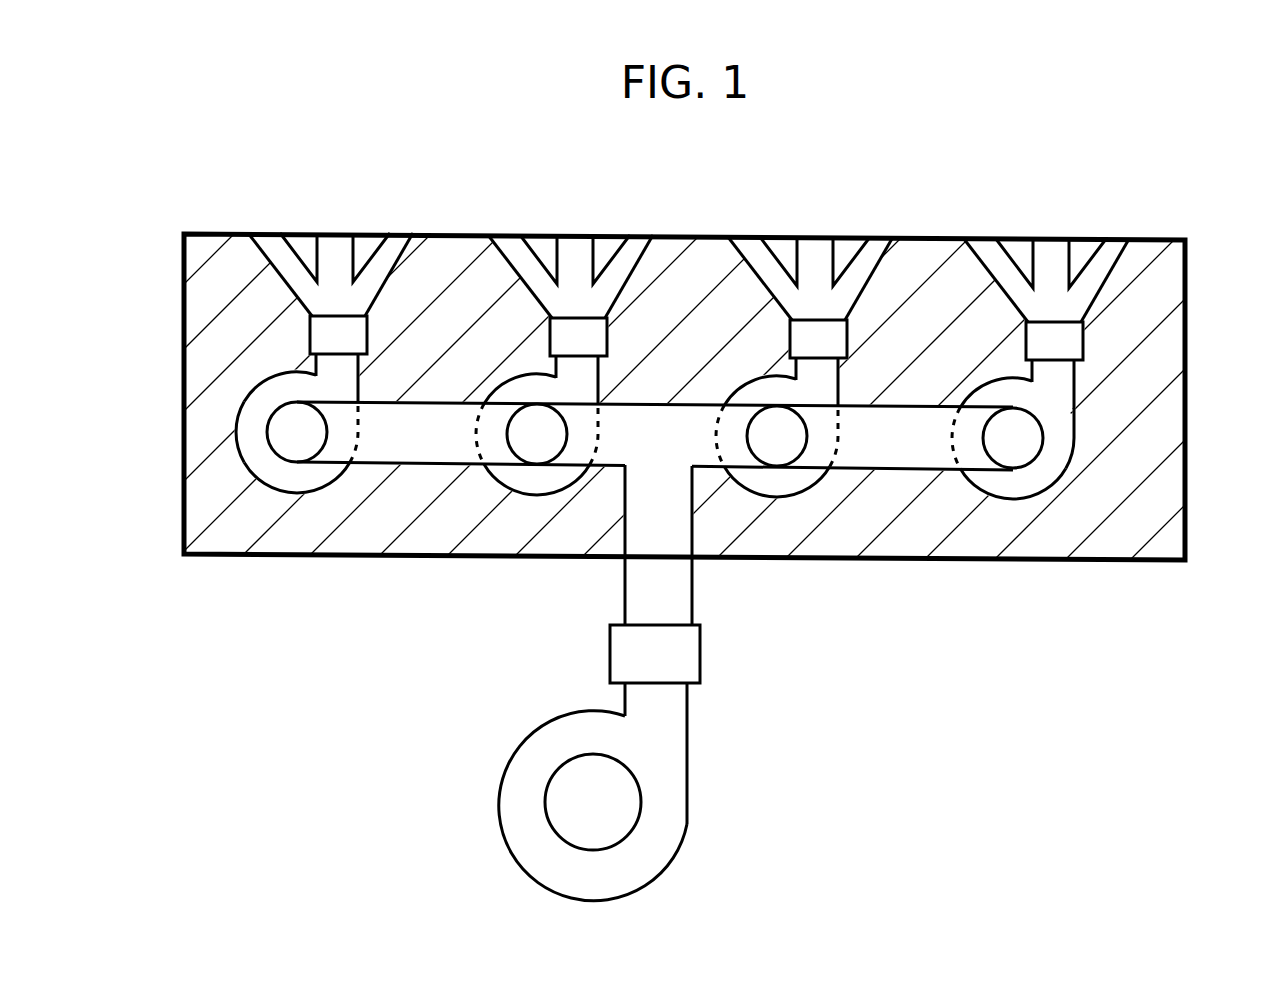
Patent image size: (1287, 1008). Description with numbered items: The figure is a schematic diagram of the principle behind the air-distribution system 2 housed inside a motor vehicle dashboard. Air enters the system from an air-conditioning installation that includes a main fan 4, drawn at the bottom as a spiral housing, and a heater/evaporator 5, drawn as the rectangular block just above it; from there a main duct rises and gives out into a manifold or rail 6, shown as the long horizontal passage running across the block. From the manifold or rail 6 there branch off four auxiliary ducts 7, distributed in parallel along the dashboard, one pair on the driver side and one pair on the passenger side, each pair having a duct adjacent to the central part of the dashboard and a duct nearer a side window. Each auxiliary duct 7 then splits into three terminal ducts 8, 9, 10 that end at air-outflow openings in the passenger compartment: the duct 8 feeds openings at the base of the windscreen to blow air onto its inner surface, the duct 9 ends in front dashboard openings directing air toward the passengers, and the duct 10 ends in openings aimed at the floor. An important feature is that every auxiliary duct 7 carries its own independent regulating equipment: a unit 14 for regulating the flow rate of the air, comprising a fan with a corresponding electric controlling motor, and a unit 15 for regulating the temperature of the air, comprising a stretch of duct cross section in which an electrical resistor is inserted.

The air-distribution system 2 is at (1052, 522).
The main fan 4 is at (500, 833).
The heater/evaporator 5 is at (677, 658).
The manifold or rail 6 is at (425, 448).
The auxiliary duct 7 is at (812, 372).
The terminal duct 8 is at (256, 232).
The terminal duct 9 is at (335, 245).
The terminal duct 10 is at (392, 250).
The unit for regulating the flow rate of the air 14 is at (262, 493).
The unit for regulating the temperature of the air 15 is at (550, 345).